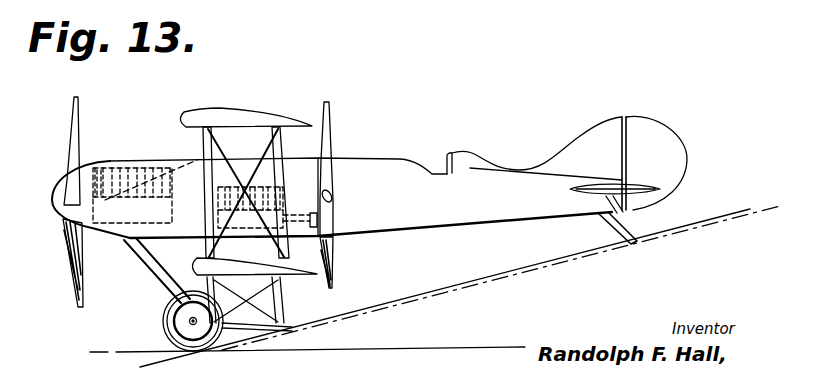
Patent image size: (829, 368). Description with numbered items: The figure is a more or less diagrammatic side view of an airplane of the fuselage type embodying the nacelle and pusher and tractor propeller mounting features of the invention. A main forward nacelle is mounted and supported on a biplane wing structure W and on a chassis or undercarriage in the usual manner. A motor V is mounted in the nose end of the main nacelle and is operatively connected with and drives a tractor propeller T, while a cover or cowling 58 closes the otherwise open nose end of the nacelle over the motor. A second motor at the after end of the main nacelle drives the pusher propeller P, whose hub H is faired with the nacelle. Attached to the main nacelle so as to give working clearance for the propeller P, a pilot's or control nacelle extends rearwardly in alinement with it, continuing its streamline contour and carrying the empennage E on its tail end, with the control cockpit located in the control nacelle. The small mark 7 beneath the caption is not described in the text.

The figure index 7 is at (122, 70).
The tractor propeller T is at (67, 143).
The cover or cowling 58 is at (94, 182).
The motor V is at (118, 187).
The biplane wing structure W is at (270, 124).
The pusher propeller P is at (323, 130).
The hub H is at (327, 170).
The empennage E is at (605, 122).